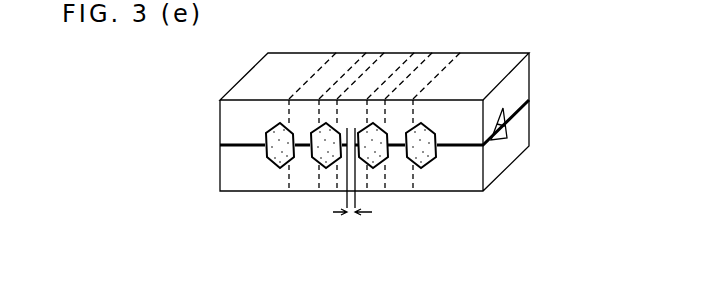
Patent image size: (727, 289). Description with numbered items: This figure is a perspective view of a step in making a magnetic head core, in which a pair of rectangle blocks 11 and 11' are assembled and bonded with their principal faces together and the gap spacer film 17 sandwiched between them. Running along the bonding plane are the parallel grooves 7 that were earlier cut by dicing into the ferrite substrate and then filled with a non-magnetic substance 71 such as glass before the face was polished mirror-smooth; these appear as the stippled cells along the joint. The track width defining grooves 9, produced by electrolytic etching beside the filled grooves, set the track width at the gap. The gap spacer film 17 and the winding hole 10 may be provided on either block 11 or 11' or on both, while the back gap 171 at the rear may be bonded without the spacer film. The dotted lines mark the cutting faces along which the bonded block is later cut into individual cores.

The track width defining groove 9 is at (334, 142).
The gap spacer film 17 is at (352, 143).
The back gap 171 is at (517, 93).
The winding hole 10 is at (503, 125).
The rectangle block 11 is at (353, 98).
The rectangle block 11' is at (352, 145).
The non-magnetic substance 71 is at (272, 168).
The parallel groove 7 is at (422, 168).